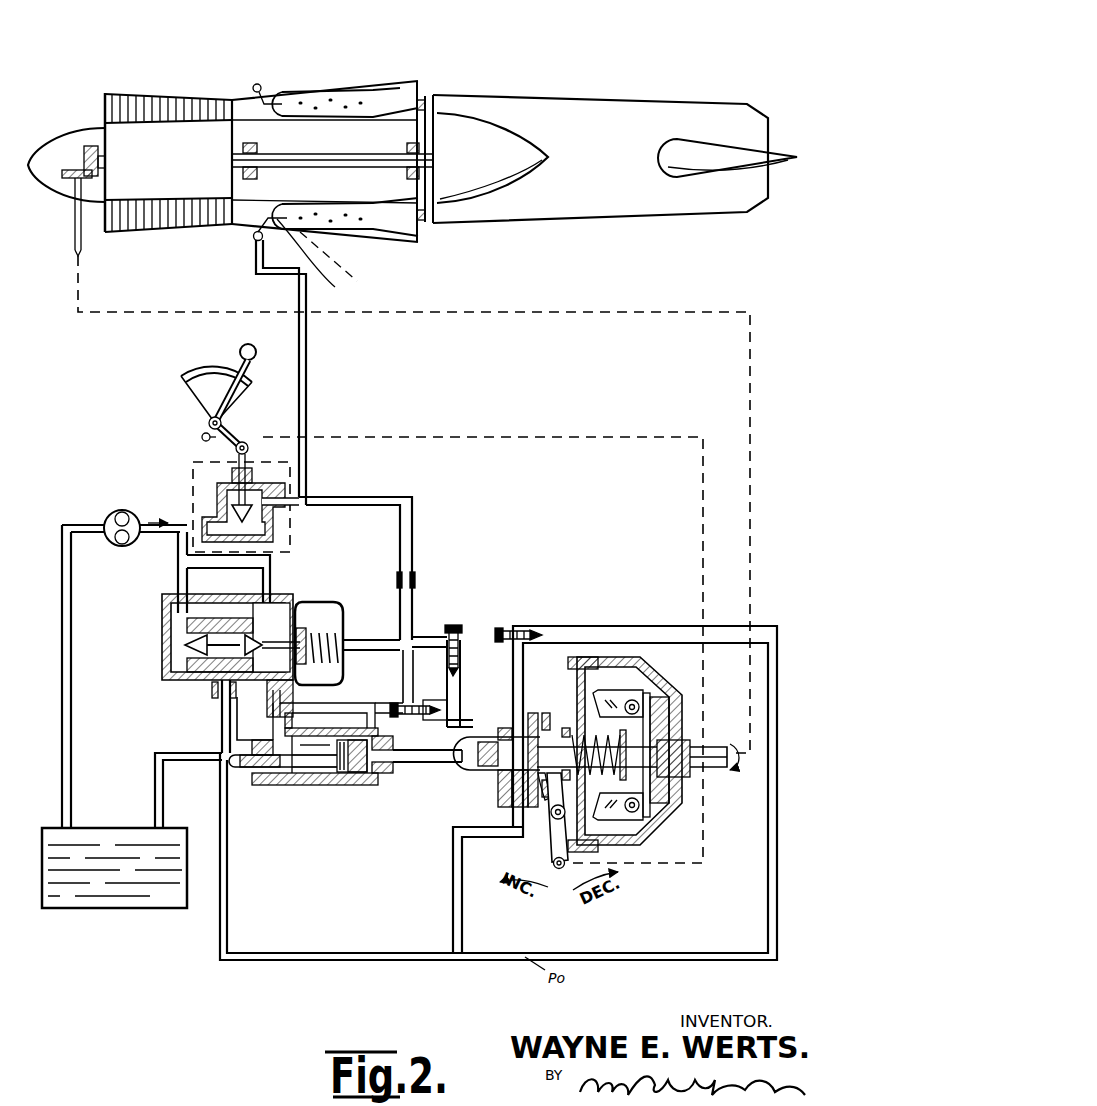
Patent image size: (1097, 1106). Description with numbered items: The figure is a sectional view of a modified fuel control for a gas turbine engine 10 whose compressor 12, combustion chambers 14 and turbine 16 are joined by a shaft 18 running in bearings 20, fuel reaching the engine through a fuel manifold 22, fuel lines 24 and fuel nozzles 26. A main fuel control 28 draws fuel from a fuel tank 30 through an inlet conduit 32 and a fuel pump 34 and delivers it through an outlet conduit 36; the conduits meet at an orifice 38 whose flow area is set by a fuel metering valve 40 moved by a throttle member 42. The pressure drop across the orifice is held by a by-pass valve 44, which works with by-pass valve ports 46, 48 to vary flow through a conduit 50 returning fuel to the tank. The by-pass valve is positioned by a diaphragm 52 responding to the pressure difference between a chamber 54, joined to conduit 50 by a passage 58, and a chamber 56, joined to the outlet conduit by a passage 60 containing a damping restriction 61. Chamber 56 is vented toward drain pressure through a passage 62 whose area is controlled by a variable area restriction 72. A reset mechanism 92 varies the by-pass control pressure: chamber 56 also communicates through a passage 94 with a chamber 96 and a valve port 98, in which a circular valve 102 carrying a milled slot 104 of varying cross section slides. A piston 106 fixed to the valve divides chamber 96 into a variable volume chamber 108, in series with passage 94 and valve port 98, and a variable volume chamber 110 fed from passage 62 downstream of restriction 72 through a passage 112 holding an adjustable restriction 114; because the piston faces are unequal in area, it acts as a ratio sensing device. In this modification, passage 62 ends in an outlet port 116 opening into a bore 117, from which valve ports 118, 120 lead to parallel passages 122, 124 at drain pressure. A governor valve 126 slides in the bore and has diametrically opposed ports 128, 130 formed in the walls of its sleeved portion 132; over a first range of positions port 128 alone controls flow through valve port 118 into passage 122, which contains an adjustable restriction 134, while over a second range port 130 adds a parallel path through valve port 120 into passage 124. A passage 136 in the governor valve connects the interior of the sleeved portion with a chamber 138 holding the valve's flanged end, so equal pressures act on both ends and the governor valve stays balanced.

The gas turbine engine 10 is at (354, 74).
The compressor 12 is at (153, 110).
The combustion chambers 14 is at (398, 235).
The turbine 16 is at (440, 100).
The shaft 18 is at (366, 158).
The bearings 20 is at (437, 172).
The fuel manifold 22 is at (254, 238).
The fuel lines 24 is at (321, 261).
The fuel nozzles 26 is at (355, 263).
The main fuel control 28 is at (192, 456).
The fuel tank 30 is at (148, 902).
The inlet conduit 32 is at (90, 527).
The fuel pump 34 is at (124, 547).
The outlet conduit 36 is at (307, 345).
The orifice 38 is at (290, 524).
The fuel metering valve 40 is at (216, 506).
The throttle member 42 is at (243, 362).
The by-pass valve 44 is at (168, 662).
The by-pass valve port 46 is at (186, 642).
The by-pass valve port 48 is at (232, 617).
The conduit 50 is at (215, 740).
The diaphragm 52 is at (312, 608).
The chamber 54 is at (212, 688).
The chamber 56 is at (346, 661).
The passage 58 is at (268, 566).
The passage 60 is at (397, 635).
The damping restriction 61 is at (408, 576).
The passage 62 is at (430, 640).
The variable area restriction 72 is at (462, 650).
The reset mechanism 92 is at (308, 790).
The passage 94 is at (405, 673).
The chamber 96 is at (315, 790).
The valve port 98 is at (262, 710).
The circular valve 102 is at (305, 783).
The milled slot 104 is at (255, 758).
The piston 106 is at (328, 790).
The variable volume chamber 108 is at (315, 793).
The variable volume chamber 110 is at (343, 782).
The passage 112 is at (358, 782).
The adjustable restriction 114 is at (432, 757).
The outlet port 116 is at (468, 770).
The bore 117 is at (483, 775).
The valve port 118 is at (525, 735).
The valve port 120 is at (528, 810).
The passage 122 is at (623, 640).
The passage 124 is at (452, 888).
The governor valve 126 is at (600, 800).
The port 128 is at (510, 735).
The port 130 is at (541, 821).
The sleeved portion 132 is at (482, 738).
The adjustable restriction 134 is at (525, 640).
The passage 136 is at (598, 698).
The chamber 138 is at (625, 680).